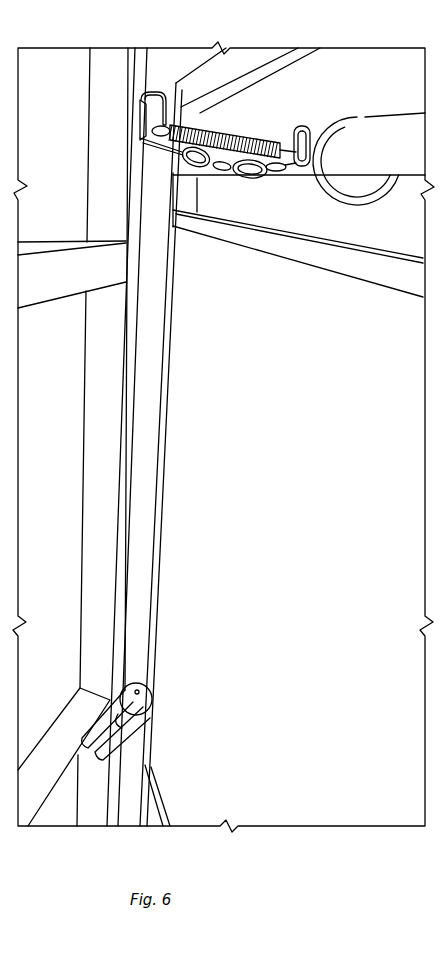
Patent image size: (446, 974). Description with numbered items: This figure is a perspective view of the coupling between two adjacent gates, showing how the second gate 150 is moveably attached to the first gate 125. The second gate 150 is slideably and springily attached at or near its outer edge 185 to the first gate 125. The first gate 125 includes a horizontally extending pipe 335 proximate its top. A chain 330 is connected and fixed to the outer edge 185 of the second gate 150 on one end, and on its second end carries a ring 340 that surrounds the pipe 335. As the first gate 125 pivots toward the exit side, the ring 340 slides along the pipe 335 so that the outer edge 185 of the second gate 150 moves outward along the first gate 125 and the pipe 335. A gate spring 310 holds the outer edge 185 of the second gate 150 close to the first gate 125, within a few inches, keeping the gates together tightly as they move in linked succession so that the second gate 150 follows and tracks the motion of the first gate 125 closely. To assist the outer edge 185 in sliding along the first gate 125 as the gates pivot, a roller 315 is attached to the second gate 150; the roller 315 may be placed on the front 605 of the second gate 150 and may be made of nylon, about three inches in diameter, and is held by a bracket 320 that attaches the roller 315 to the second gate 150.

The first gate 125 is at (281, 486).
The second gate 150 is at (38, 472).
The outer edge 185 is at (140, 66).
The gate spring 310 is at (240, 133).
The roller 315 is at (152, 705).
The bracket 320 is at (115, 718).
The chain 330 is at (218, 172).
The pipe 335 is at (363, 157).
The ring 340 is at (344, 118).
The front 605 is at (52, 594).